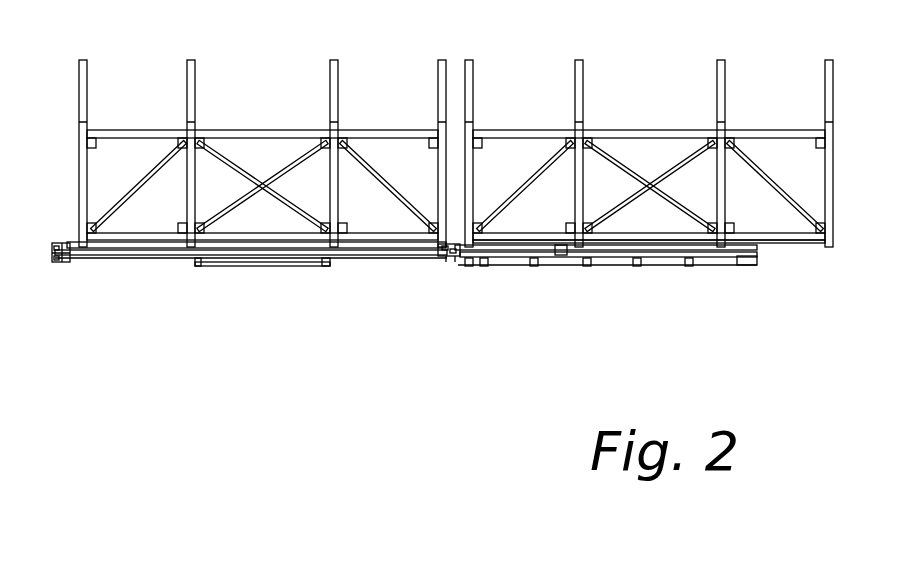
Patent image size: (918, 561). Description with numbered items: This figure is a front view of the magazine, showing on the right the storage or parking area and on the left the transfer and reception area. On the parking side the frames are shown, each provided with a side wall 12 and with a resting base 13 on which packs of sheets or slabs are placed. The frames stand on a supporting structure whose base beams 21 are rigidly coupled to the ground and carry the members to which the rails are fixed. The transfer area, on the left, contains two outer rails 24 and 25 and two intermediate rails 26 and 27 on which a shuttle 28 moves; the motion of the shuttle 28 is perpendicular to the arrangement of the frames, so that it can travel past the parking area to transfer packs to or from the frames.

The side wall 12 is at (645, 133).
The resting base 13 is at (787, 241).
The base beams 21 is at (607, 267).
The outer rail 24 is at (443, 278).
The outer rail 25 is at (58, 278).
The intermediate rail 26 is at (198, 278).
The intermediate rail 27 is at (325, 278).
The shuttle 28 is at (152, 248).